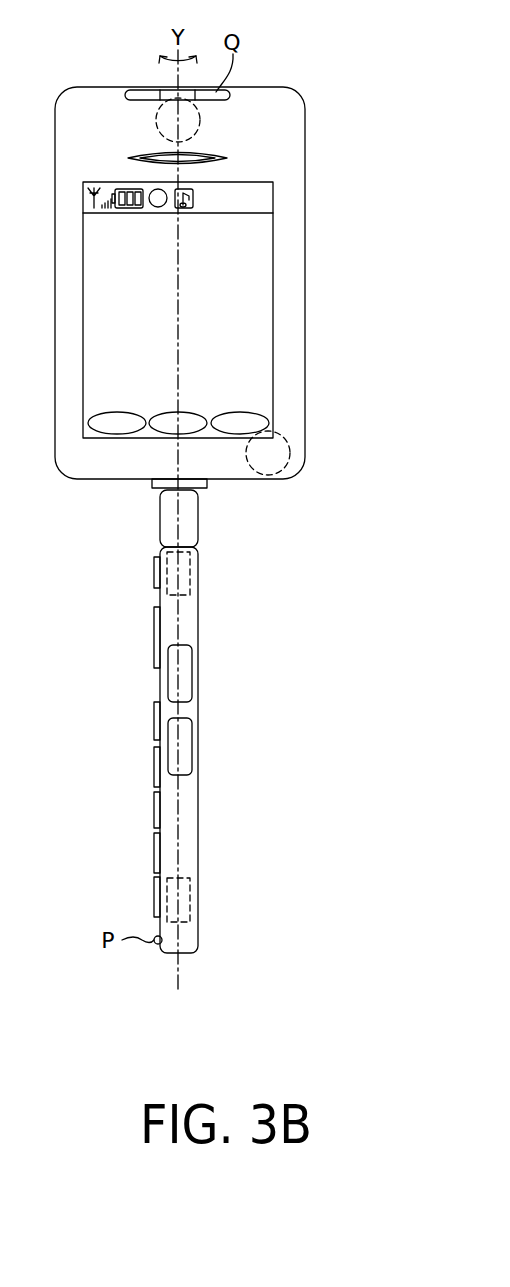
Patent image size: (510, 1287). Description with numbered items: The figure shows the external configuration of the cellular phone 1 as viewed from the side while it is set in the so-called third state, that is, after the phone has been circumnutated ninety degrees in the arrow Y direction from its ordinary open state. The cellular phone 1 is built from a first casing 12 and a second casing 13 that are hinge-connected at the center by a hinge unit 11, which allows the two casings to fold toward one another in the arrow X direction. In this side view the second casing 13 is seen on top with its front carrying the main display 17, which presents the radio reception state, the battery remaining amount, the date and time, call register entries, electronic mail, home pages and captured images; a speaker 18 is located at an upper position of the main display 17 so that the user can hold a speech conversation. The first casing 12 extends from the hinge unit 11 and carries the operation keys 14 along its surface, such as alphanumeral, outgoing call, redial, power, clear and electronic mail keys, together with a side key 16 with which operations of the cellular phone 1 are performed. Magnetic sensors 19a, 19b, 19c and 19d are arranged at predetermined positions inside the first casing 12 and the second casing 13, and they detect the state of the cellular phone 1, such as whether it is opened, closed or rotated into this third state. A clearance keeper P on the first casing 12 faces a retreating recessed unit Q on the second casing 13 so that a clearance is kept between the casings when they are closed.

The cellular phone 1 is at (229, 793).
The hinge unit 11 is at (198, 520).
The first casing 12 is at (198, 625).
The second casing 13 is at (288, 267).
The operation keys 14 is at (147, 573).
The side key 16 is at (192, 673).
The main display 17 is at (262, 232).
The speaker 18 is at (226, 157).
The magnetic sensor 19a is at (200, 118).
The magnetic sensor 19b is at (190, 902).
The magnetic sensor 19c is at (290, 450).
The magnetic sensor 19d is at (190, 572).